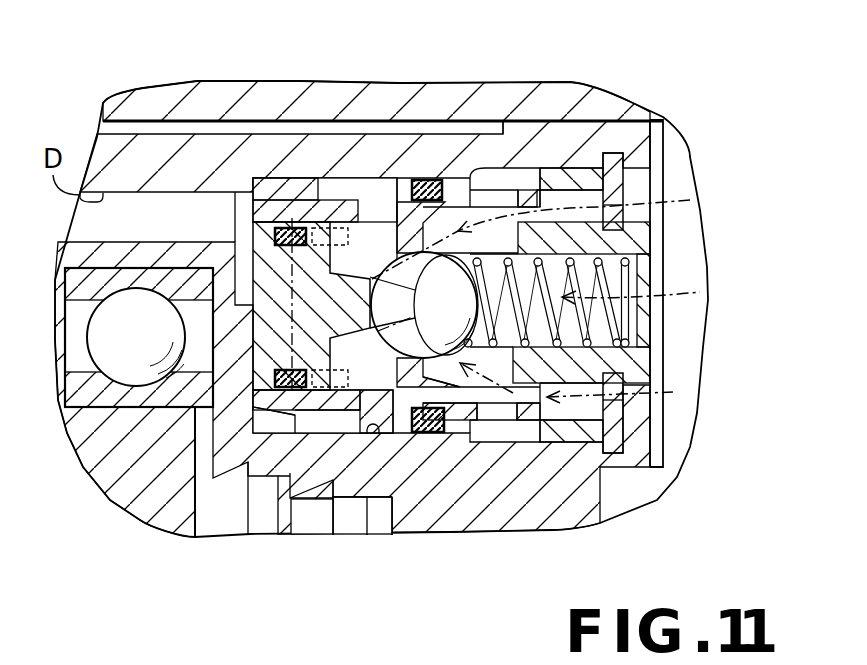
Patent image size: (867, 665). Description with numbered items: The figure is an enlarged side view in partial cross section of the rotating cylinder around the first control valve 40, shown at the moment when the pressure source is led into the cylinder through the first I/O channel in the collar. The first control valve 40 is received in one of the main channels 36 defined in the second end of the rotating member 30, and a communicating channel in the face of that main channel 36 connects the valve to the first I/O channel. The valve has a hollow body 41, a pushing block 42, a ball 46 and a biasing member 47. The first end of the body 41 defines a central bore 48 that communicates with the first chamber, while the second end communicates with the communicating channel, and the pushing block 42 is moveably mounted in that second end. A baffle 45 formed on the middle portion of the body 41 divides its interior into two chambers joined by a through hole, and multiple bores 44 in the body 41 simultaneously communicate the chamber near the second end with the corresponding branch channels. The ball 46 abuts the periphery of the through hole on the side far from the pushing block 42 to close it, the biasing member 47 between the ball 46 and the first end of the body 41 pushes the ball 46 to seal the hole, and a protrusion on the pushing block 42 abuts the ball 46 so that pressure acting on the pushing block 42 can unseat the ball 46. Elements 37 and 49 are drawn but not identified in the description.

The rotating member 30 is at (462, 522).
The main channel 36 is at (379, 433).
The pin 37 is at (615, 165).
The first control valve 40 is at (343, 64).
The hollow body 41 is at (337, 405).
The pushing block 42 is at (260, 263).
The bores 44 is at (375, 208).
The baffle 45 is at (408, 248).
The ball 46 is at (406, 268).
The biasing member 47 is at (600, 287).
The central bore 48 is at (640, 322).
The pin 49 is at (577, 415).